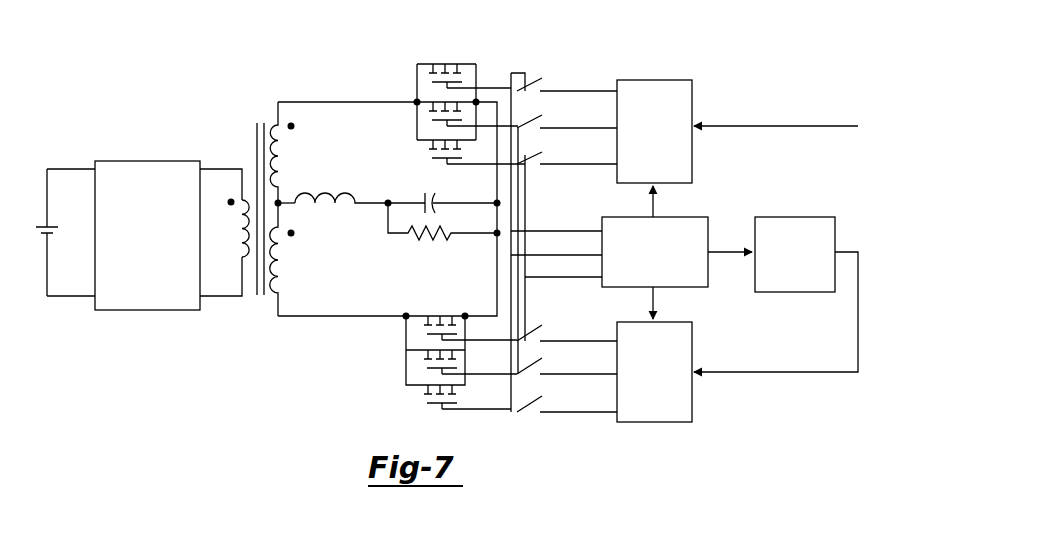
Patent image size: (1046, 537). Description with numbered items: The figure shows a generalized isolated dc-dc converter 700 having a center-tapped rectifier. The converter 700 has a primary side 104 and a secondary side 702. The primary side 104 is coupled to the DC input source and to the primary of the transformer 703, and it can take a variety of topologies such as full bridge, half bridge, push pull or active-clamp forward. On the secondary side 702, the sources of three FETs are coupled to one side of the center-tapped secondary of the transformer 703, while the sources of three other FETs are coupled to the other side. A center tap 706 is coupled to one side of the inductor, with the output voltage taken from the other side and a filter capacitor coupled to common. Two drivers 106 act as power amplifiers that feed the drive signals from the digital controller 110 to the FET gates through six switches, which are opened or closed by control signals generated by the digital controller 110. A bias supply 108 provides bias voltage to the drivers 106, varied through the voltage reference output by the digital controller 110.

The primary side 104 is at (116, 148).
The transformer 703 is at (257, 112).
The center tap 706 is at (280, 204).
The isolated dc-dc converter 700 is at (227, 375).
The secondary side 702 is at (742, 81).
The drivers 106 is at (668, 80).
The digital controller 110 is at (700, 217).
The bias supply 108 is at (765, 292).